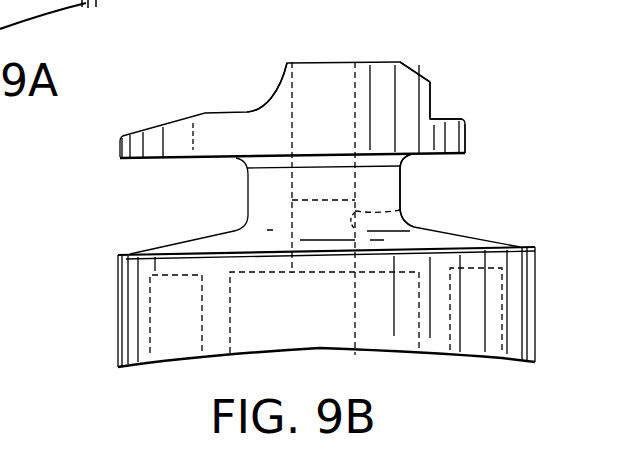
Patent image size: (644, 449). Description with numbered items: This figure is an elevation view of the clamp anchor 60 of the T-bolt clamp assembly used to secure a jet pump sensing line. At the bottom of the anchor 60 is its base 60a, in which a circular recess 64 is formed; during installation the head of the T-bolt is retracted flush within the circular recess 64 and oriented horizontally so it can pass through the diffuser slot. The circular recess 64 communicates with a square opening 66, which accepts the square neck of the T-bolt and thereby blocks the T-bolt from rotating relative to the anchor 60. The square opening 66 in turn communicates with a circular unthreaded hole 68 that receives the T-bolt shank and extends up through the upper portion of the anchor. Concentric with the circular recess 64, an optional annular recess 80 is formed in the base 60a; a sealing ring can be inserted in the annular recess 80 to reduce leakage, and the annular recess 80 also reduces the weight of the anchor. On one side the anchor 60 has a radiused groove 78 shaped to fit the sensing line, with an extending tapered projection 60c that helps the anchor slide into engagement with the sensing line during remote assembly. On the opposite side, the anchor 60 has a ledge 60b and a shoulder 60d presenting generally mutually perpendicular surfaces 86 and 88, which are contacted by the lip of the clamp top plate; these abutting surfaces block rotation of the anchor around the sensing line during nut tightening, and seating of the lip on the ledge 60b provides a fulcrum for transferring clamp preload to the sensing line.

The anchor 60 is at (107, 212).
The base 60a is at (516, 360).
The ledge 60b is at (469, 142).
The tapered projection 60c is at (145, 130).
The shoulder 60d is at (422, 65).
The circular recess 64 is at (420, 312).
The square opening 66 is at (402, 210).
The circular unthreaded hole 68 is at (354, 82).
The radiused groove 78 is at (258, 107).
The annular recess 80 is at (502, 323).
The contact surface on ledge 86 is at (455, 120).
The contact surface on shoulder 88 is at (432, 95).